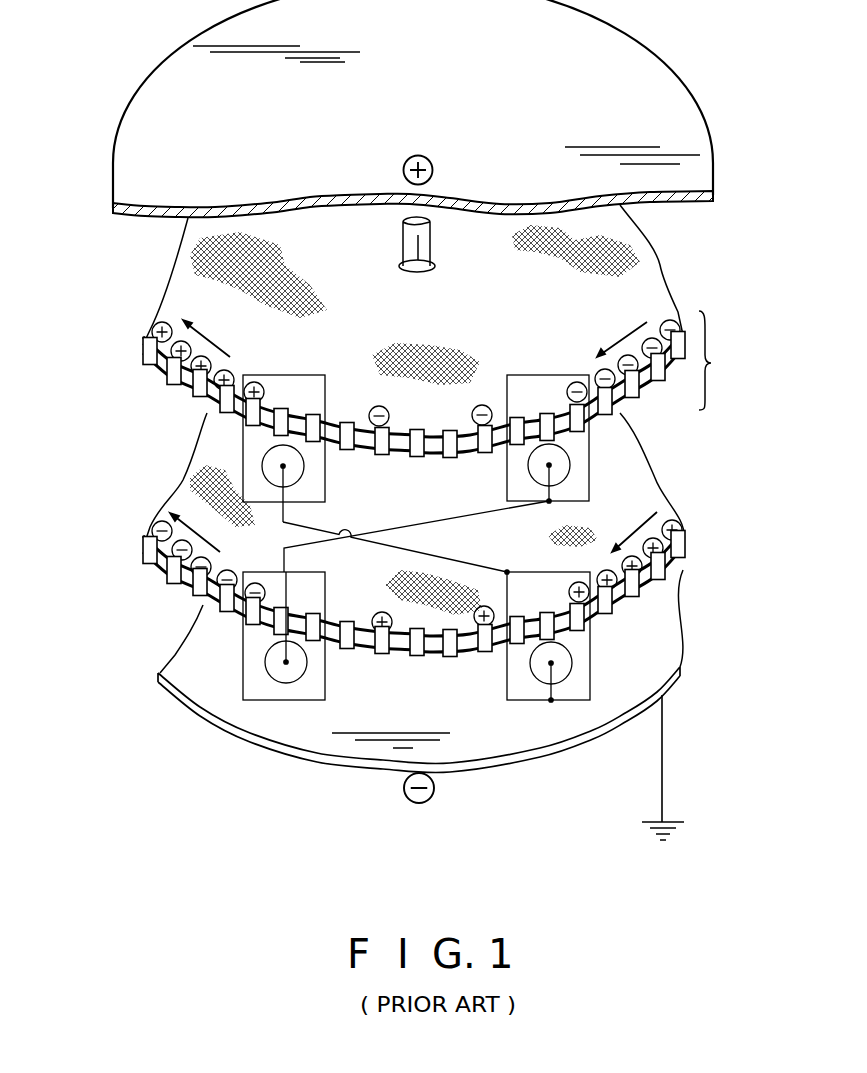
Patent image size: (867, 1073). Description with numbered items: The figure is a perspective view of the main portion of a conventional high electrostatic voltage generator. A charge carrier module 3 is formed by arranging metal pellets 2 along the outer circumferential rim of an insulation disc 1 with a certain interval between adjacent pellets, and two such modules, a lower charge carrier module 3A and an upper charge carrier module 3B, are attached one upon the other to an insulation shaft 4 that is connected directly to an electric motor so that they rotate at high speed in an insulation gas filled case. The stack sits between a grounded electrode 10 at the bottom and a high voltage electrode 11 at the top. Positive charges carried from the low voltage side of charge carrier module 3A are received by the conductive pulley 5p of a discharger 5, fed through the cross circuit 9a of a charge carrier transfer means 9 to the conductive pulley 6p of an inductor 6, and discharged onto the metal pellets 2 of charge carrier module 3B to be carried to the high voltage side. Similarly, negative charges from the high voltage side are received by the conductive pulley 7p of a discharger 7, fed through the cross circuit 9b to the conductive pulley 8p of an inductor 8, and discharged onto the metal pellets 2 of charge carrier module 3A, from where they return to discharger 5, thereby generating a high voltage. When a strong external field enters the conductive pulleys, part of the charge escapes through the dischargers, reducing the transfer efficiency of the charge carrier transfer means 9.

The insulation disc 1 is at (650, 283).
The metal pellets 2 is at (177, 390).
The charge carrier module 3 is at (435, 376).
The charge carrier module 3A is at (643, 518).
The charge carrier module 3B is at (617, 321).
The insulation shaft 4 is at (432, 244).
The discharger 5 is at (570, 655).
The conductive pulley 5p is at (573, 664).
The inductor 6 is at (274, 450).
The conductive pulley 6p is at (262, 464).
The discharger 7 is at (569, 458).
The conductive pulley 7p is at (571, 466).
The inductor 8 is at (262, 654).
The conductive pulley 8p is at (265, 663).
The charge carrier transfer means 9 is at (416, 532).
The cross circuit 9a is at (438, 540).
The cross circuit 9b is at (430, 521).
The grounded electrode 10 is at (505, 762).
The high voltage electrode 11 is at (522, 204).